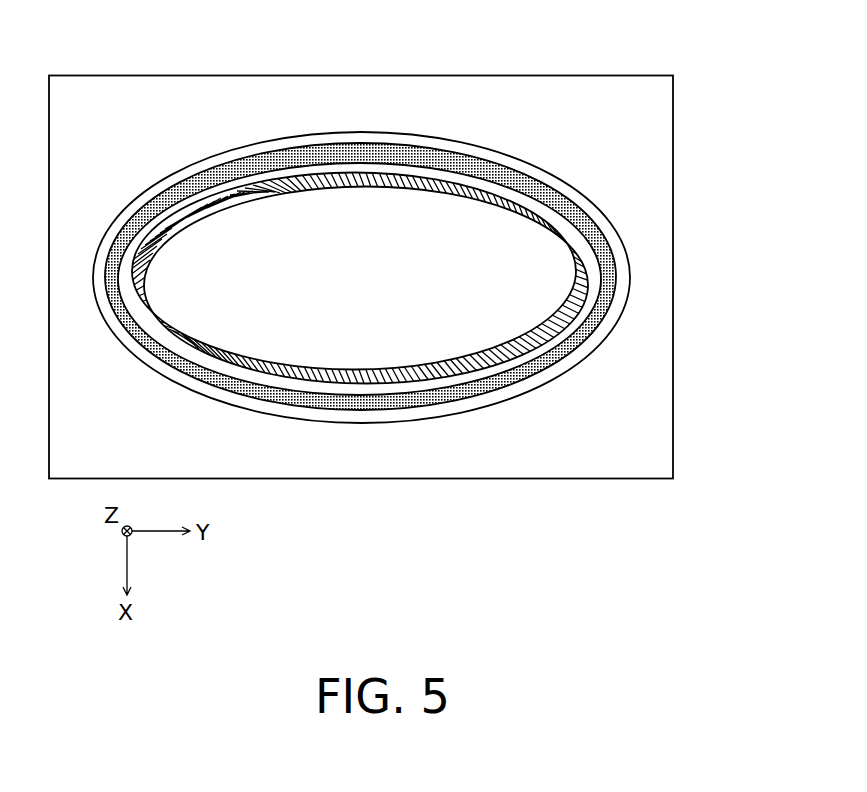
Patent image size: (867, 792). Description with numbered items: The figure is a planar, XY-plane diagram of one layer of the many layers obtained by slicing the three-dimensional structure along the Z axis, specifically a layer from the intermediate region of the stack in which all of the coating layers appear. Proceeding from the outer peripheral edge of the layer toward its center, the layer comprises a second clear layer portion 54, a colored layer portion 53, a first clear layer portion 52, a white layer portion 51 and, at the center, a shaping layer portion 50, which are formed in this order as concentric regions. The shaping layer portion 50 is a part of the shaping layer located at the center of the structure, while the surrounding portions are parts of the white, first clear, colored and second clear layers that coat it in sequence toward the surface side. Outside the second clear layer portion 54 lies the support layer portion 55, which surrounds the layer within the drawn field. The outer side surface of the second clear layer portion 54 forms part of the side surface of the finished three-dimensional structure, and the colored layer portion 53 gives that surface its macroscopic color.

The shaping layer portion 50 is at (287, 217).
The white layer portion 51 is at (363, 172).
The first clear layer portion 52 is at (442, 170).
The colored layer portion 53 is at (575, 202).
The second clear layer portion 54 is at (612, 235).
The support layer portion 55 is at (578, 87).